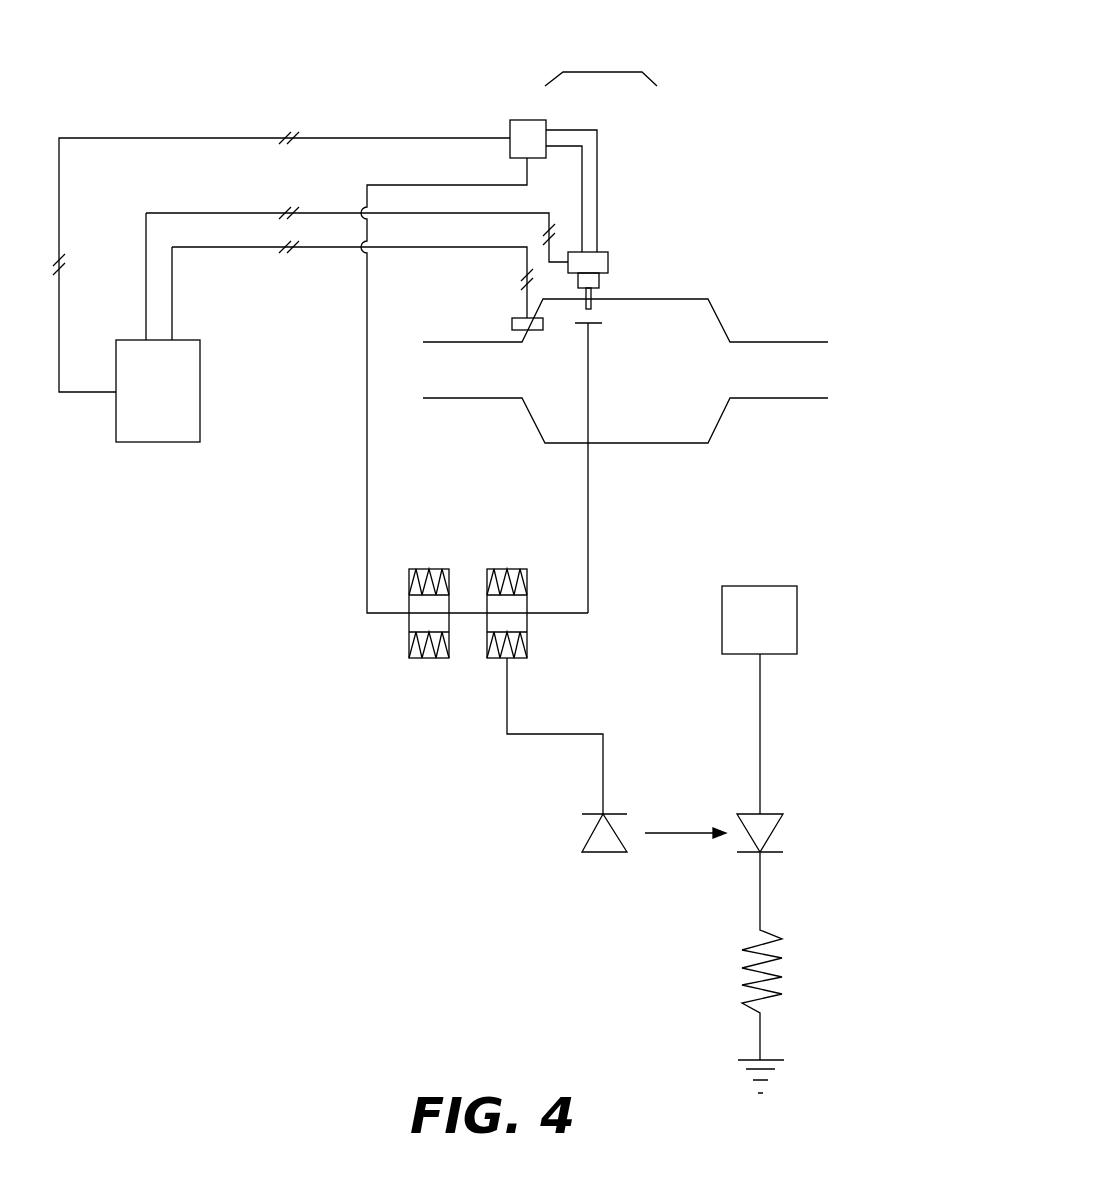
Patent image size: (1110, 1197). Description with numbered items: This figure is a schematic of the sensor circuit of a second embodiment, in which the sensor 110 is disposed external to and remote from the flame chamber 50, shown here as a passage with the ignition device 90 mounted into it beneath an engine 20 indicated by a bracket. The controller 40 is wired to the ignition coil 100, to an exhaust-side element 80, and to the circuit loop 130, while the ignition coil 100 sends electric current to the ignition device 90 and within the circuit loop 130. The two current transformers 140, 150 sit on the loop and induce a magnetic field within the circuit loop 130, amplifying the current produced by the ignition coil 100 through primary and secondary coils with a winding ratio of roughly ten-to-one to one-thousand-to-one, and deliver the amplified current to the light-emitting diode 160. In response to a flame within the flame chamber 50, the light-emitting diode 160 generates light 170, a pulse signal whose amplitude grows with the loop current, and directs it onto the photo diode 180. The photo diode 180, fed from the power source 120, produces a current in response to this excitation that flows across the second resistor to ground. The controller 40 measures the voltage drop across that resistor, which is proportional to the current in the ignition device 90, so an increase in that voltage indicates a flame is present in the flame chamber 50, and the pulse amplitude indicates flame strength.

The engine 20 is at (603, 72).
The controller 40 is at (143, 402).
The flame chamber 50 is at (545, 443).
The exhaust sensor 80 is at (518, 318).
The ignition device 90 is at (603, 252).
The ignition coil 100 is at (509, 122).
The sensor 110 is at (448, 900).
The power source 120 is at (739, 629).
The circuit loop 130 is at (488, 712).
The current transformer 140 is at (418, 658).
The current transformer 150 is at (500, 658).
The light-emitting diode 160 is at (580, 832).
The light 170 is at (678, 833).
The photo diode 180 is at (777, 843).